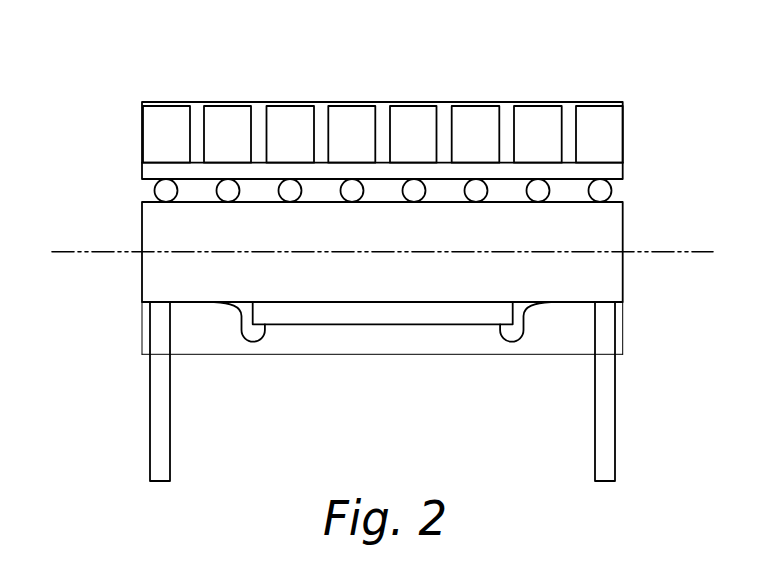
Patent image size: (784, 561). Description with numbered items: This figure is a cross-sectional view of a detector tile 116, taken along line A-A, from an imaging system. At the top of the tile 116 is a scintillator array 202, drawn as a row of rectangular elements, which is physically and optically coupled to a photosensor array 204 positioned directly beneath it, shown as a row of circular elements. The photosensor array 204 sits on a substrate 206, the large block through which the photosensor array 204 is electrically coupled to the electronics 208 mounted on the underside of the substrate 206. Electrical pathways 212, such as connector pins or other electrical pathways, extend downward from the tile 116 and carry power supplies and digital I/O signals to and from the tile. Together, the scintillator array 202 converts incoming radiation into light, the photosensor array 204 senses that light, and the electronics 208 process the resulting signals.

The detector tile 116 is at (574, 78).
The scintillator array 202 is at (160, 102).
The photosensor array 204 is at (623, 170).
The substrate 206 is at (623, 275).
The electronics 208 is at (391, 334).
The electrical pathways 212 is at (150, 420).
The line A- A is at (90, 252).